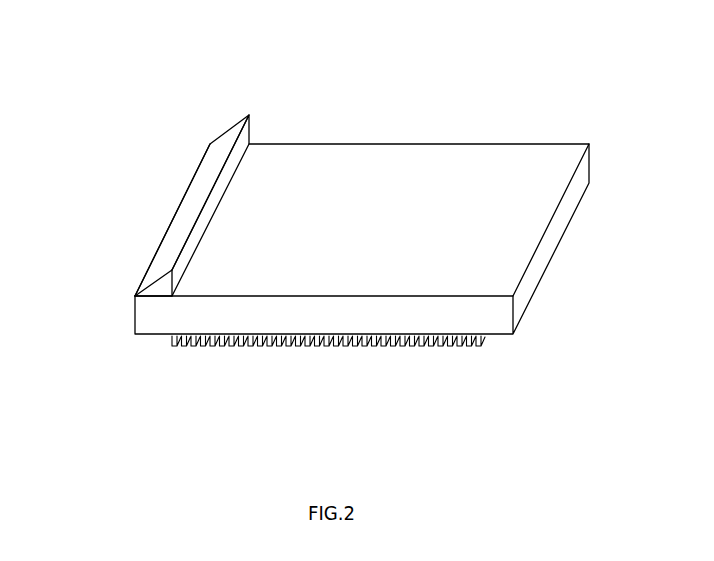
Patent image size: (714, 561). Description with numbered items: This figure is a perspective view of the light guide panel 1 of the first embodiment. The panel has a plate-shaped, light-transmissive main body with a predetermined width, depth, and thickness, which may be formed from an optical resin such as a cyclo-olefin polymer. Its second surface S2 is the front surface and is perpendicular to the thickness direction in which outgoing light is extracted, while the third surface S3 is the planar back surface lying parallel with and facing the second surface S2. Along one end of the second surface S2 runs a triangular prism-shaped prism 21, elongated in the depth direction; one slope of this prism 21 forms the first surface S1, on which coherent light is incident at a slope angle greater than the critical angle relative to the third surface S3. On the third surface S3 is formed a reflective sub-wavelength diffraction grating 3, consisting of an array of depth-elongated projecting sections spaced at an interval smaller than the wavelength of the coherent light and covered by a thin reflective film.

The light guide panel 1 is at (123, 120).
The prism 21 is at (220, 150).
The first surface S1 is at (188, 207).
The second surface S2 is at (393, 170).
The third surface S3 is at (487, 338).
The reflective sub-wavelength diffraction grating 3 is at (342, 348).